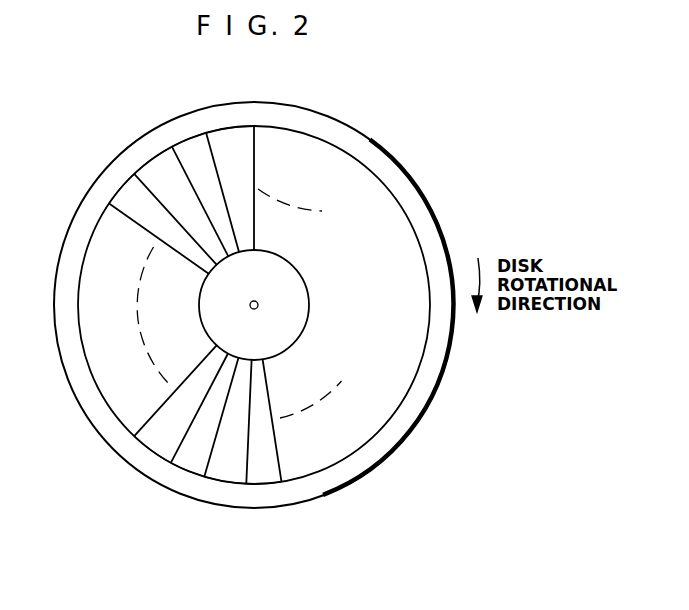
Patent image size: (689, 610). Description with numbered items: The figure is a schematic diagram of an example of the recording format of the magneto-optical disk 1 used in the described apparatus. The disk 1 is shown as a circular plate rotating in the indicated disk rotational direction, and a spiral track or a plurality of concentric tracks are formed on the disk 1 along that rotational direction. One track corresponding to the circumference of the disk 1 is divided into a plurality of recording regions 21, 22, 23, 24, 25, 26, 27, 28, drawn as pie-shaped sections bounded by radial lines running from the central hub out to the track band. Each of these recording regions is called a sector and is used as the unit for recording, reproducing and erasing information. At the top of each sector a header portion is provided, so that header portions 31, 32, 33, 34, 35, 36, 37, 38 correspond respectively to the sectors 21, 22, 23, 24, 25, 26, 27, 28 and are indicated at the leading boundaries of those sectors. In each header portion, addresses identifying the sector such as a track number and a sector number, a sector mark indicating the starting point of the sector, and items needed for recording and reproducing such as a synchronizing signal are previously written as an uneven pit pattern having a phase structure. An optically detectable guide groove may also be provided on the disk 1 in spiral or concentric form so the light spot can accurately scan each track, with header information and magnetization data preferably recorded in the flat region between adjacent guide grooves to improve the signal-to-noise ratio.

The disk 1 is at (380, 143).
The recording region 21 is at (230, 134).
The recording region 22 is at (192, 146).
The recording region 23 is at (155, 162).
The recording region 24 is at (118, 197).
The recording region 25 is at (156, 452).
The recording region 26 is at (186, 468).
The recording region 27 is at (227, 482).
The recording region 28 is at (268, 480).
The header portion 31 is at (257, 130).
The header portion 32 is at (206, 138).
The header portion 33 is at (169, 146).
The header portion 34 is at (131, 174).
The header portion 35 is at (138, 431).
The header portion 36 is at (170, 457).
The header portion 37 is at (206, 474).
The header portion 38 is at (252, 479).